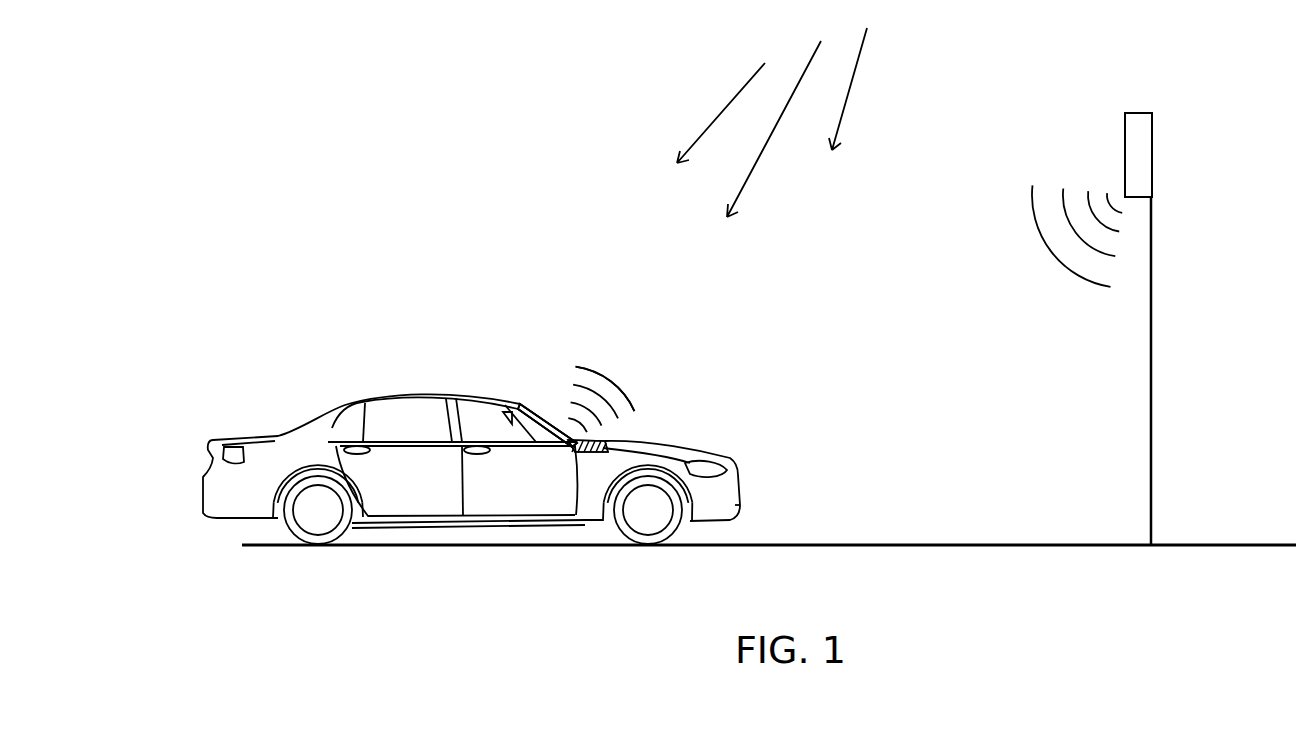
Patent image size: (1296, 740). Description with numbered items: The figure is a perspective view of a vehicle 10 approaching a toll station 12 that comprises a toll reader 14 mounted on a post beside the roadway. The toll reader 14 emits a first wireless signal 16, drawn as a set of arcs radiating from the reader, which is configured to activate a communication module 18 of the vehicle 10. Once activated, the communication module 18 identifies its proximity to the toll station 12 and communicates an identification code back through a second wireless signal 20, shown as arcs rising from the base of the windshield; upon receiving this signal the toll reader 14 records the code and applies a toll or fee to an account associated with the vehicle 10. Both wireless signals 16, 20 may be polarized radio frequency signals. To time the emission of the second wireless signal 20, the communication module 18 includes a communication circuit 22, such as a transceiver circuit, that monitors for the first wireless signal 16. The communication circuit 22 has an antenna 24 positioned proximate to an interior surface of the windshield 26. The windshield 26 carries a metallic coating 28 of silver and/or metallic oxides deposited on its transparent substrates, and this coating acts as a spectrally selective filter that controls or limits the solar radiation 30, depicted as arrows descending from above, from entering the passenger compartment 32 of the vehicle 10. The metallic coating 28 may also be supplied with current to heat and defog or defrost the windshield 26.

The vehicle 10 is at (298, 388).
The toll station 12 is at (1110, 99).
The toll reader 14 is at (1153, 155).
The first wireless signal 16 is at (1009, 186).
The communication module 18 is at (626, 443).
The second wireless signal 20 is at (644, 386).
The communication circuit 22 is at (655, 428).
The antenna 24 is at (563, 427).
The windshield 26 is at (530, 403).
The metallic coating 28 is at (505, 352).
The solar radiation 30 is at (688, 118).
The passenger compartment 32 is at (499, 437).